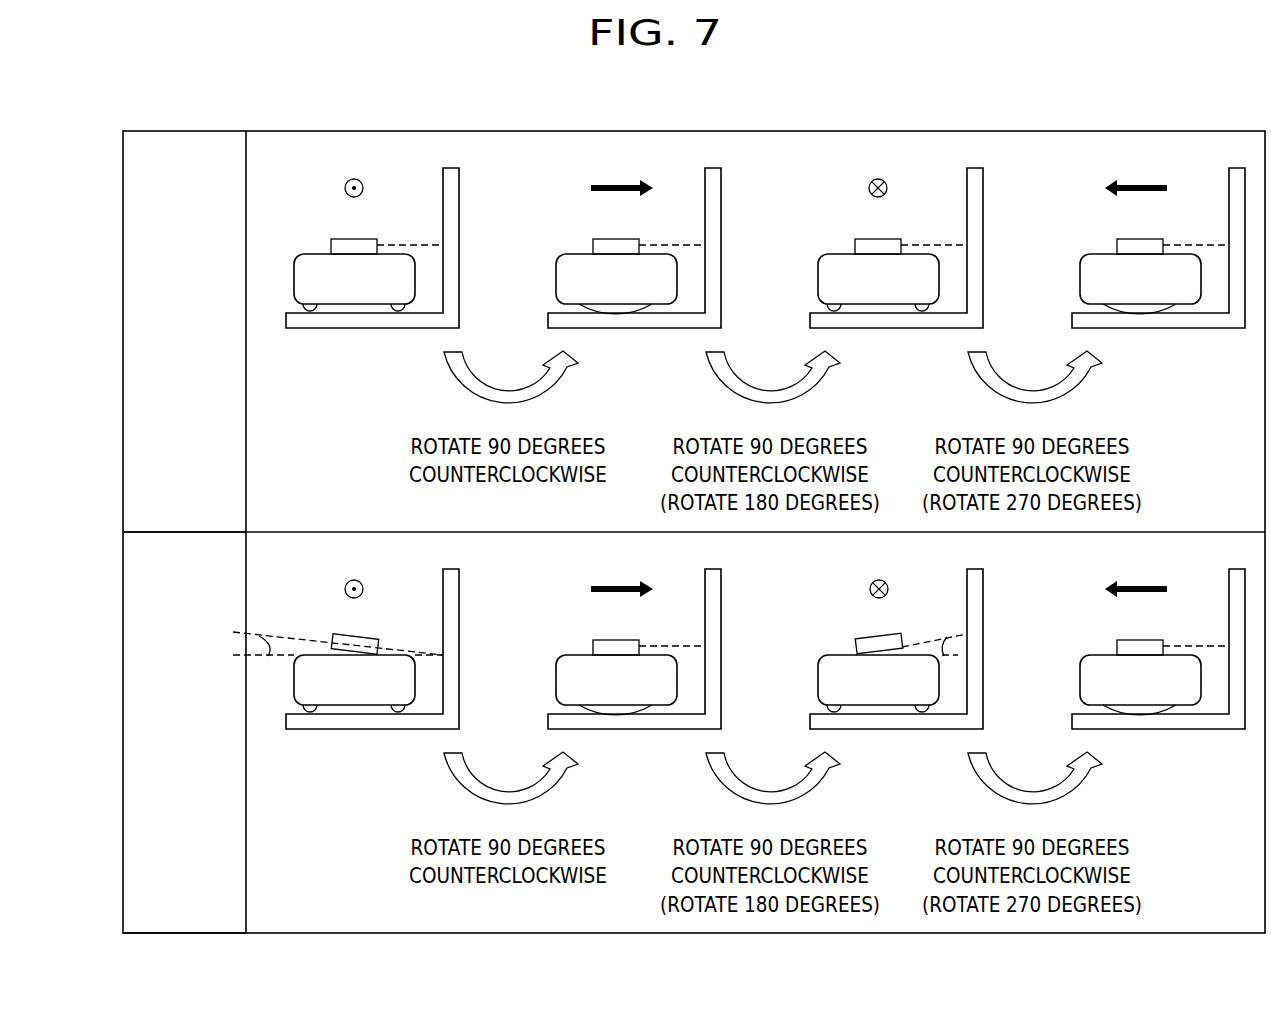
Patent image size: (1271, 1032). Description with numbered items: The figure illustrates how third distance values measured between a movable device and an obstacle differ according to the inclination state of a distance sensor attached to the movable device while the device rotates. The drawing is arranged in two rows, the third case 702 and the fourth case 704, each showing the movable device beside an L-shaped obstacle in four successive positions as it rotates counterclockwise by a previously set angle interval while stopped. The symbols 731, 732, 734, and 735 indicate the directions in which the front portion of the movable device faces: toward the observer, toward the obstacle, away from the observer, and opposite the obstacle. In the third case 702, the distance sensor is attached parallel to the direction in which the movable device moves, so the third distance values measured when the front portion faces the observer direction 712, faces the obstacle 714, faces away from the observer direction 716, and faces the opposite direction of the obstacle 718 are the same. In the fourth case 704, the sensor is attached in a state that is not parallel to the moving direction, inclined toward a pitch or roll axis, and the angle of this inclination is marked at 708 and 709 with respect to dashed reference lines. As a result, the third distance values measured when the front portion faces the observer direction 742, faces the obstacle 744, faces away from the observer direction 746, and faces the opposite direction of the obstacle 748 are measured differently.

The case 3 702 is at (122, 333).
The case 4 704 is at (122, 728).
The tilt angle 708 is at (260, 636).
The tilt angle 709 is at (947, 637).
The front portion facing observer direction 712 is at (368, 249).
The front portion facing the obstacle 714 is at (634, 248).
The front portion facing away from observer direction 716 is at (923, 257).
The front portion facing opposite direction of the obstacle 718 is at (1158, 248).
The direction symbol 731 is at (344, 182).
The direction symbol 732 is at (612, 185).
The direction symbol 734 is at (888, 183).
The direction symbol 735 is at (1143, 185).
The front portion facing observer direction 742 is at (346, 665).
The front portion facing the obstacle 744 is at (636, 758).
The front portion facing away from observer direction 746 is at (925, 660).
The front portion facing opposite direction of the obstacle 748 is at (1160, 758).